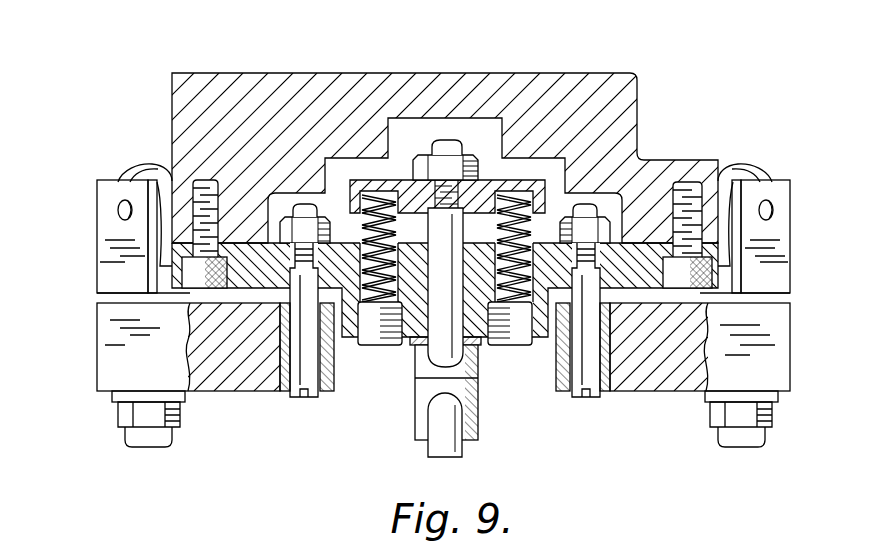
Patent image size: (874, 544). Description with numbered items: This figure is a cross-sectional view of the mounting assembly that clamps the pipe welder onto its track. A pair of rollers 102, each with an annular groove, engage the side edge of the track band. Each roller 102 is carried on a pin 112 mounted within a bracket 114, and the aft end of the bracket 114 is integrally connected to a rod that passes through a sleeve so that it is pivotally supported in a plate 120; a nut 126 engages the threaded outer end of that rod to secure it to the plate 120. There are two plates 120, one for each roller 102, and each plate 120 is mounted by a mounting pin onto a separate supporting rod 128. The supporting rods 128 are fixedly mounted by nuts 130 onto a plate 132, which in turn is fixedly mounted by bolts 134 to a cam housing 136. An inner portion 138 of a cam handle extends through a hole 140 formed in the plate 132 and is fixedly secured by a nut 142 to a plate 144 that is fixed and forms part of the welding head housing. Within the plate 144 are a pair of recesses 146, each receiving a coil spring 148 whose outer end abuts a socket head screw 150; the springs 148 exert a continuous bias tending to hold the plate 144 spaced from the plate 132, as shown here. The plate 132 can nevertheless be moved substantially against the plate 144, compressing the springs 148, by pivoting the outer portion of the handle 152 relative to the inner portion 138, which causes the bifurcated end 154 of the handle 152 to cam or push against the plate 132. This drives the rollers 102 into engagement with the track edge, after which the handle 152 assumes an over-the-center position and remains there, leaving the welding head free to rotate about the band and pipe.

The roller 102 is at (140, 182).
The pin 112 is at (117, 209).
The bracket 114 is at (100, 243).
The plate 120 is at (108, 340).
The nut 126 is at (128, 417).
The supporting rod 128 is at (298, 398).
The nut 130 is at (278, 218).
The plate 132 is at (255, 285).
The bolt 134 is at (172, 165).
The cam housing 136 is at (444, 92).
The inner portion of cam handle 138 is at (475, 385).
The hole 140 is at (427, 358).
The nut 142 is at (463, 150).
The plate 144 is at (488, 186).
The recess 146 is at (375, 190).
The coil spring 148 is at (378, 350).
The socket head screw 150 is at (385, 345).
The handle 152 is at (438, 435).
The bifurcated end 154 is at (478, 440).